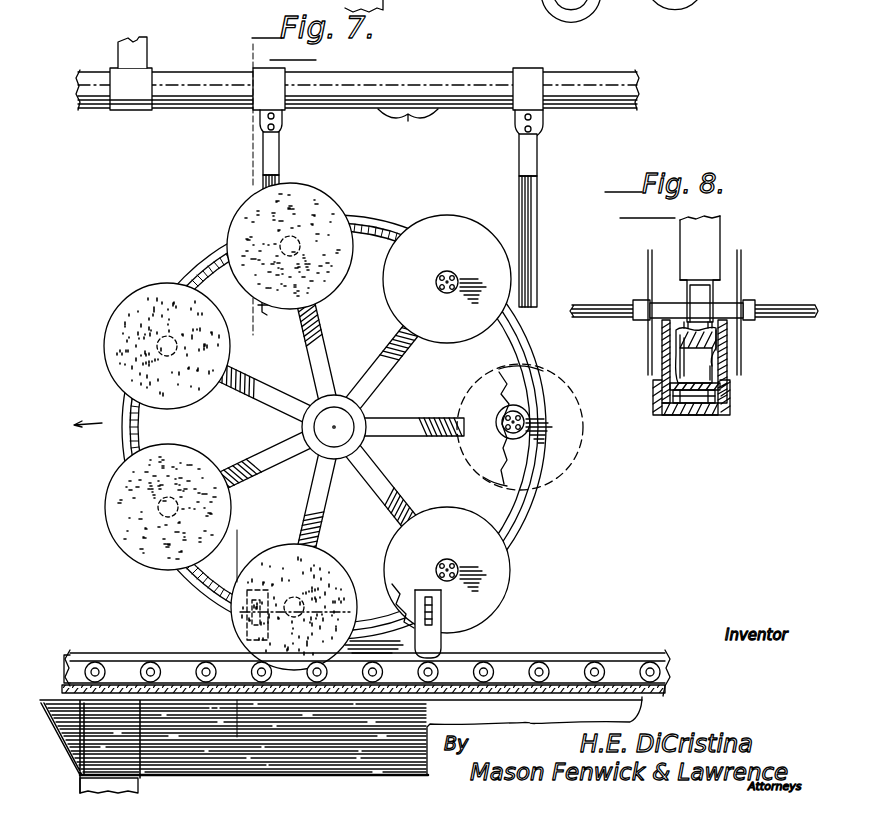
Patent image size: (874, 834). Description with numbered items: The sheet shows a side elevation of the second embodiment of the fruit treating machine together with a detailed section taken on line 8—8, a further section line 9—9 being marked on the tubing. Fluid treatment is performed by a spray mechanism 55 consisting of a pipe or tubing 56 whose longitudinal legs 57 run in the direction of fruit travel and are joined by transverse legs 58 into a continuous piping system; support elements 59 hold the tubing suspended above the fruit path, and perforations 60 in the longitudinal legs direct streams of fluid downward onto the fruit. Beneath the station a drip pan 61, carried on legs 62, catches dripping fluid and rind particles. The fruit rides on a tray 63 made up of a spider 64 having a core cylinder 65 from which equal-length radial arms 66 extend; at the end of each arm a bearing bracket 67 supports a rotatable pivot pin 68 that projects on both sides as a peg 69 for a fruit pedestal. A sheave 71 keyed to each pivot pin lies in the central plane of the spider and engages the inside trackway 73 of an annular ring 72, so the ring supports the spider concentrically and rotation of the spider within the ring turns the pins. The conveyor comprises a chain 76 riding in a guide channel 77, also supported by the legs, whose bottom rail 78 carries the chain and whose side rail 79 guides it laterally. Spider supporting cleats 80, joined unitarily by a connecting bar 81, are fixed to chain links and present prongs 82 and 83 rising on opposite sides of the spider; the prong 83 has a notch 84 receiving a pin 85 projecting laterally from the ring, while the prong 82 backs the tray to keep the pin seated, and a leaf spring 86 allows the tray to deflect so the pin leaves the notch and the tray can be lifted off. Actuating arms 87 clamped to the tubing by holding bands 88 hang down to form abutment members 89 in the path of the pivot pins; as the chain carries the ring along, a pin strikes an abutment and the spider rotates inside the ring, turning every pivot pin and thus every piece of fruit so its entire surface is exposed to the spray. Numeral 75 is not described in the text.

In FIG. 7, the section line 8— 8 is at (254, 548).
In FIG. 7, the section line 9— 9 is at (258, 52).
In FIG. 7, the spray mechanism 55 is at (378, 72).
In FIG. 7, the pipe or tubing 56 is at (213, 98).
In FIG. 7, the longitudinal legs 57 is at (445, 80).
In FIG. 7, the transverse legs 58 is at (134, 103).
In FIG. 7, the support elements 59 is at (116, 57).
In FIG. 7, the perforations 60 is at (408, 126).
In FIG. 7, the drip pan 61 is at (50, 702).
In FIG. 7, the legs 62 is at (140, 787).
In FIG. 7, the tray 63 is at (530, 521).
In FIG. 7, the spider 64 is at (290, 407).
In FIG. 7, the core cylinder 65 is at (354, 420).
In FIG. 7, the arms 66 is at (311, 355).
In FIG. 8, the arms 66 is at (702, 252).
In FIG. 8, the bearing bracket 67 is at (712, 290).
In FIG. 8, the pivot pin 68 is at (725, 310).
In FIG. 8, the peg 69 is at (646, 305).
In FIG. 8, the sheave 71 is at (696, 302).
In FIG. 7, the annular ring 72 is at (525, 342).
In FIG. 8, the annular ring 72 is at (720, 365).
In FIG. 7, the inside trackway 73 is at (386, 244).
In FIG. 8, the inside trackway 73 is at (686, 331).
In FIG. 7, the chain 75 is at (160, 651).
In FIG. 7, the chain 76 is at (185, 668).
In FIG. 8, the chain 76 is at (690, 404).
In FIG. 7, the guide channel 77 is at (83, 655).
In FIG. 7, the bottom rail 78 is at (117, 688).
In FIG. 8, the bottom rail 78 is at (694, 415).
In FIG. 7, the side rail 79 is at (207, 655).
In FIG. 8, the side rail 79 is at (656, 397).
In FIG. 7, the spider supporting cleat 80 is at (382, 560).
In FIG. 8, the spider supporting cleat 80 is at (650, 370).
In FIG. 7, the connecting bar 81 is at (398, 619).
In FIG. 8, the connecting bar 81 is at (720, 392).
In FIG. 8, the prong 82 is at (680, 339).
In FIG. 7, the prong 83 is at (420, 595).
In FIG. 8, the prong 83 is at (728, 373).
In FIG. 7, the notch 84 is at (460, 571).
In FIG. 8, the notch 84 is at (724, 338).
In FIG. 7, the pin 85 is at (447, 599).
In FIG. 8, the pin 85 is at (724, 351).
In FIG. 8, the leaf spring 86 is at (670, 353).
In FIG. 7, the actuating arm 87 is at (263, 152).
In FIG. 7, the holding band 88 is at (532, 72).
In FIG. 7, the abutment member 89 is at (537, 237).